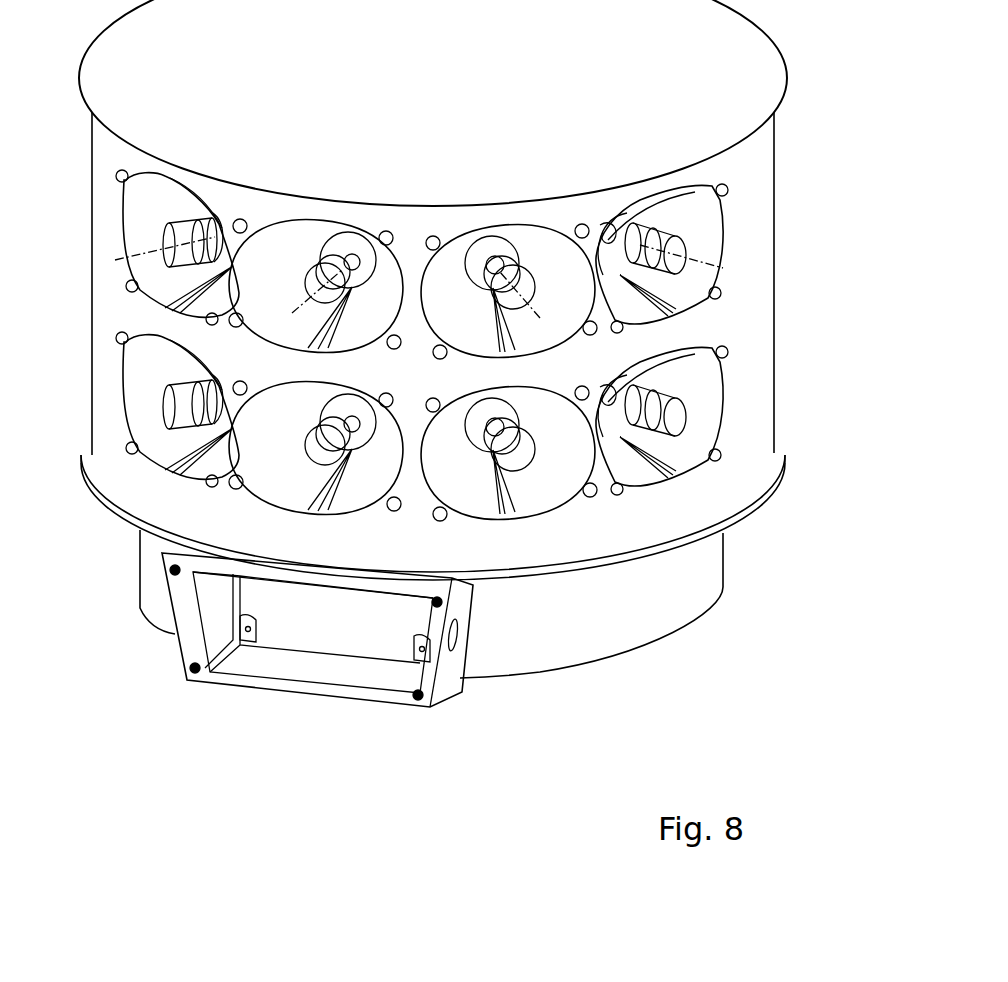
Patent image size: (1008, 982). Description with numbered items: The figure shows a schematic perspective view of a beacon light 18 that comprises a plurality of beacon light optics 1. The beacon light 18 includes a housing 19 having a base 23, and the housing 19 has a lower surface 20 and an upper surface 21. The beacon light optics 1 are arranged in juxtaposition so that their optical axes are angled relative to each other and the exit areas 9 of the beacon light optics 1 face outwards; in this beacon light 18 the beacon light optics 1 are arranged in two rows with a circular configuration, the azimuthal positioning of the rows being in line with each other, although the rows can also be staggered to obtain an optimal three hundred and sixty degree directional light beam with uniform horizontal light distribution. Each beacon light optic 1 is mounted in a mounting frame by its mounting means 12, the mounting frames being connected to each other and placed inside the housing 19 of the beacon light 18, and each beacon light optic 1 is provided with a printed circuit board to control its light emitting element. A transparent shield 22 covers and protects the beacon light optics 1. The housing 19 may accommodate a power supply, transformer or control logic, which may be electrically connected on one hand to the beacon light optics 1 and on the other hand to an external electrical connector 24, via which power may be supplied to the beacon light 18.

The beacon light optics 1 is at (698, 228).
The exit areas 9 is at (155, 203).
The mounting means 12 is at (722, 192).
The beacon light 18 is at (800, 158).
The housing 19 is at (710, 39).
The lower surface 20 is at (752, 517).
The upper surface 21 is at (464, 103).
The transparent shield 22 is at (108, 410).
The base 23 is at (665, 597).
The external electrical connector 24 is at (302, 666).